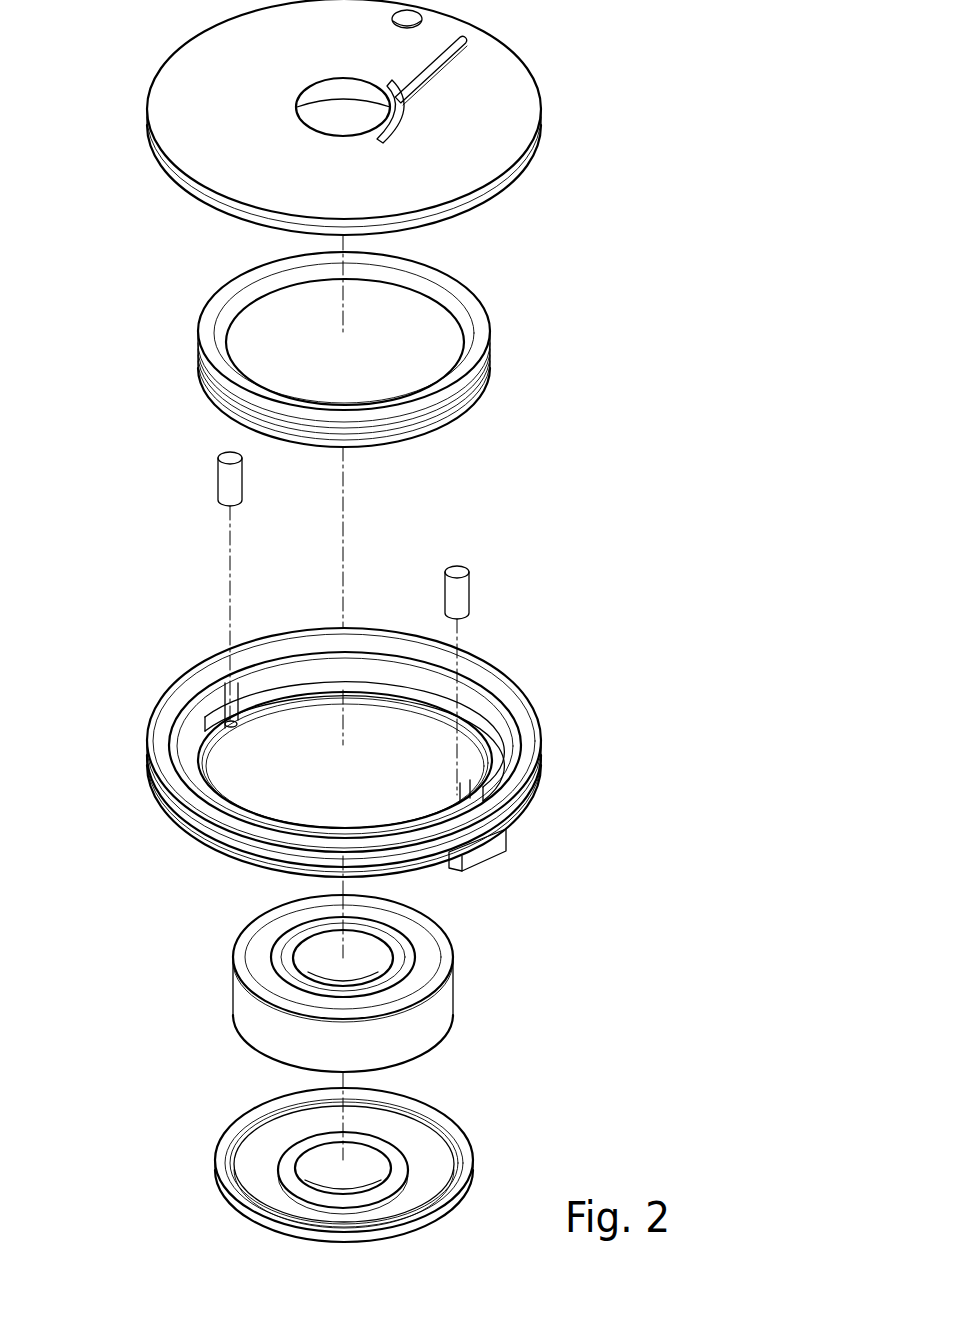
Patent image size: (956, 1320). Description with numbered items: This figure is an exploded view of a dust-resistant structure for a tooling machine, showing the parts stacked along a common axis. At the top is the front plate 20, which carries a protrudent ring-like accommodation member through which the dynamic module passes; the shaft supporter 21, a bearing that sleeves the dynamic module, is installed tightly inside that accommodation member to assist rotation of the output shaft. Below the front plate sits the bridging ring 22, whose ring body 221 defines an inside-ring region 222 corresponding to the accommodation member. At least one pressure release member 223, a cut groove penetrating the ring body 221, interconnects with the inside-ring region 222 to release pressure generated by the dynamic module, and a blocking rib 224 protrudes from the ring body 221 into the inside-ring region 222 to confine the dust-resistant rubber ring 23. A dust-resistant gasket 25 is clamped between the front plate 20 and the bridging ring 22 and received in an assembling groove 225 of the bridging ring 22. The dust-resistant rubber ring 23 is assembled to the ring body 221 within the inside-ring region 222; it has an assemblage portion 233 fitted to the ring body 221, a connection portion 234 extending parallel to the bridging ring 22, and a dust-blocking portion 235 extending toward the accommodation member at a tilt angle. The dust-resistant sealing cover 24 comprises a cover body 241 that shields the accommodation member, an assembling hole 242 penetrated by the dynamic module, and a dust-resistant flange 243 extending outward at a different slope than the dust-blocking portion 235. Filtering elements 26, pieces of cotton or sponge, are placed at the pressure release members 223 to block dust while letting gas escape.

The front plate 20 is at (513, 107).
The shaft supporter 21 is at (440, 953).
The bridging ring 22 is at (339, 713).
The ring body 221 is at (522, 797).
The inside-ring region 222 is at (386, 673).
The pressure release member 223 is at (218, 690).
The blocking rib 224 is at (468, 722).
The assembling groove 225 is at (284, 652).
The dust-resistant rubber ring 23 is at (367, 339).
The assemblage portion 233 is at (492, 366).
The connection portion 234 is at (478, 322).
The dust-blocking portion 235 is at (440, 298).
The dust-resistant sealing cover 24 is at (310, 1138).
The cover body 241 is at (430, 1160).
The assembling hole 242 is at (378, 1152).
The dust-resistant flange 243 is at (218, 1168).
The dust-resistant gasket 25 is at (181, 762).
The filtering element 26 is at (222, 481).